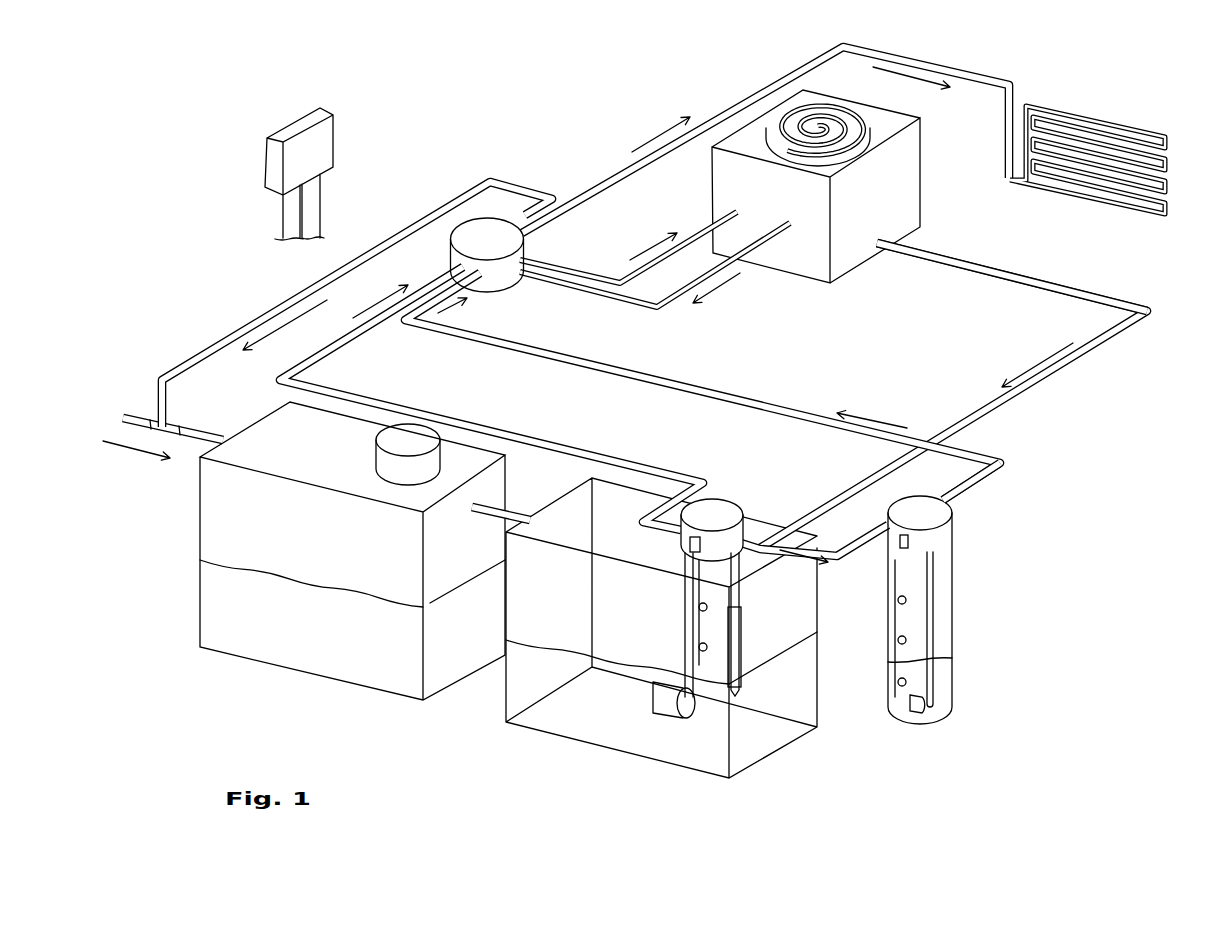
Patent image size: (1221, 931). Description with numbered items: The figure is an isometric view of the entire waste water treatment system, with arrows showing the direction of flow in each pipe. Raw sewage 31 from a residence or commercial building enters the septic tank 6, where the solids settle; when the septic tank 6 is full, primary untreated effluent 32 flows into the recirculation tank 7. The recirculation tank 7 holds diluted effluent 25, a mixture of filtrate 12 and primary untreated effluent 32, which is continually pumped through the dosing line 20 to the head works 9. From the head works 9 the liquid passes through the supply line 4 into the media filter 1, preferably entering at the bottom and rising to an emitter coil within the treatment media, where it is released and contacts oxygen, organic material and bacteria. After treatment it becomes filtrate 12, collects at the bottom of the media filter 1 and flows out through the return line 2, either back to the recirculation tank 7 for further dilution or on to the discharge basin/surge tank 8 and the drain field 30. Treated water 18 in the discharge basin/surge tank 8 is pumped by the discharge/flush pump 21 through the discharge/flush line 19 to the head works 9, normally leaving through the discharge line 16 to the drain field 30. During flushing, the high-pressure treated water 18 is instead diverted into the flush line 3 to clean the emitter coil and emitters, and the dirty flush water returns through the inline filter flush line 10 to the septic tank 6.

The media filter 1 is at (847, 267).
The return line 2 is at (1043, 283).
The flush line 3 is at (710, 275).
The supply line 4 is at (662, 255).
The septic tank 6 is at (198, 528).
The recirculation tank 7 is at (747, 770).
The discharge basin/surge tank 8 is at (953, 583).
The head works 9 is at (503, 282).
The inline filter flush line 10 is at (395, 241).
The filtrate 12 is at (967, 263).
The discharge line 16 is at (733, 107).
The treated water 18 is at (983, 478).
The discharge/flush line 19 is at (957, 452).
The dosing line 20 is at (275, 375).
The discharge/flush pump 21 is at (917, 710).
The diluted effluent 25 is at (770, 663).
The drain field 30 is at (1057, 195).
The raw sewage 31 is at (248, 572).
The primary untreated effluent 32 is at (497, 510).